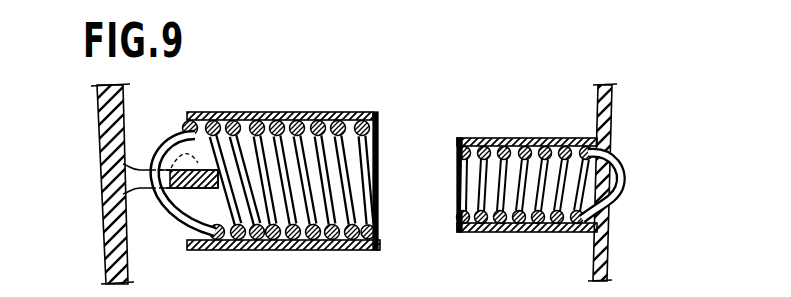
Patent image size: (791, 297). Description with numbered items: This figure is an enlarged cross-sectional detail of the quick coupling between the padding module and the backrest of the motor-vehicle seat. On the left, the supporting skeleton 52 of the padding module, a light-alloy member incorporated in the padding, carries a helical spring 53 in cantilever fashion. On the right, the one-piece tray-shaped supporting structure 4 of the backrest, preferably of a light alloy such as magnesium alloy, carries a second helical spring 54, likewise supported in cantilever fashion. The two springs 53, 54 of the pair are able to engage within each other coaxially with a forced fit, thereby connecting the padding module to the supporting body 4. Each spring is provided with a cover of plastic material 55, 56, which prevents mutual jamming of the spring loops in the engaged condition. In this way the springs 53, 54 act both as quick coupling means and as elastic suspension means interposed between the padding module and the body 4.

The supporting structure 4 is at (607, 250).
The supporting skeleton 52 is at (108, 245).
The helical spring 53 is at (283, 252).
The helical spring 54 is at (502, 218).
The cover of plastic material 55 is at (245, 112).
The cover of plastic material 56 is at (503, 138).